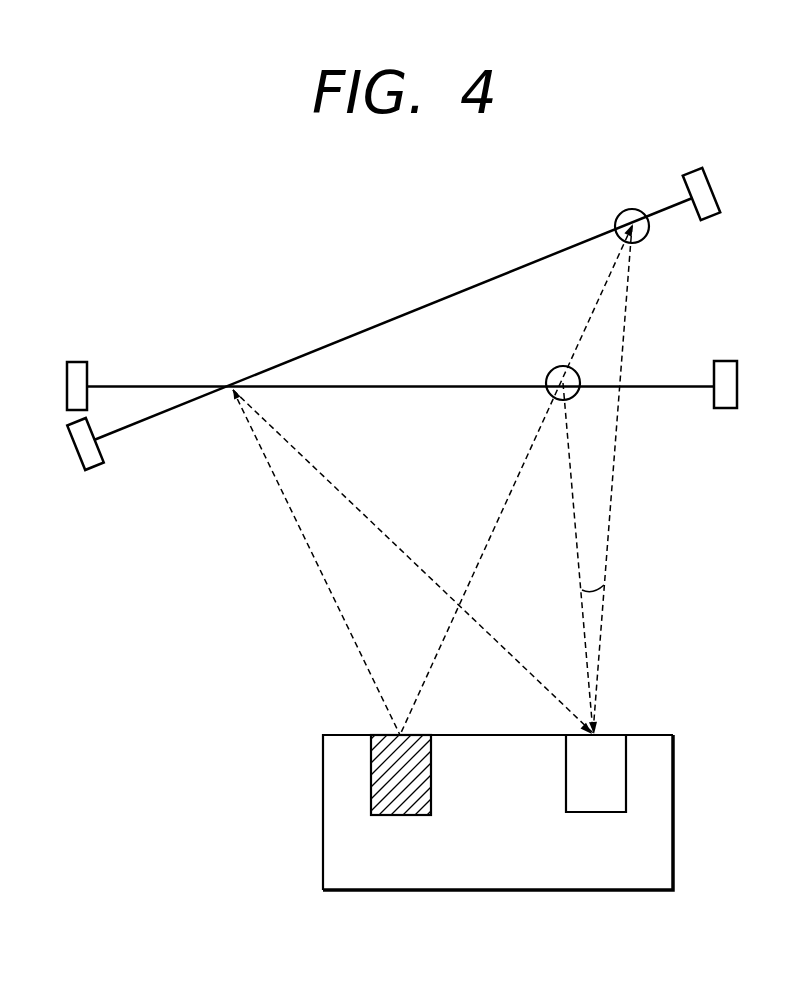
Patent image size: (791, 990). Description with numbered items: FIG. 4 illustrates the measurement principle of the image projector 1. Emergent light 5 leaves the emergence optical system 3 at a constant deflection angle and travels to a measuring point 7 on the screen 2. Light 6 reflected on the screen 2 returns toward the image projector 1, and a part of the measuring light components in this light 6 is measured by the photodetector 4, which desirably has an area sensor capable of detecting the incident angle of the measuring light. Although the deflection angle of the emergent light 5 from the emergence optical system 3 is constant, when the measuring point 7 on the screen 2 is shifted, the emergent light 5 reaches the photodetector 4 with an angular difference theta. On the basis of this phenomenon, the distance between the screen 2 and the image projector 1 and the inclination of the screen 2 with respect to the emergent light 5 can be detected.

The image projector 1 is at (465, 885).
The screen 2 is at (322, 347).
The emergence optical system 3 is at (427, 778).
The photodetector 4 is at (603, 777).
The emergent light 5 is at (312, 552).
The light reflected on the screen 6 is at (348, 497).
The measuring point 7 is at (639, 212).